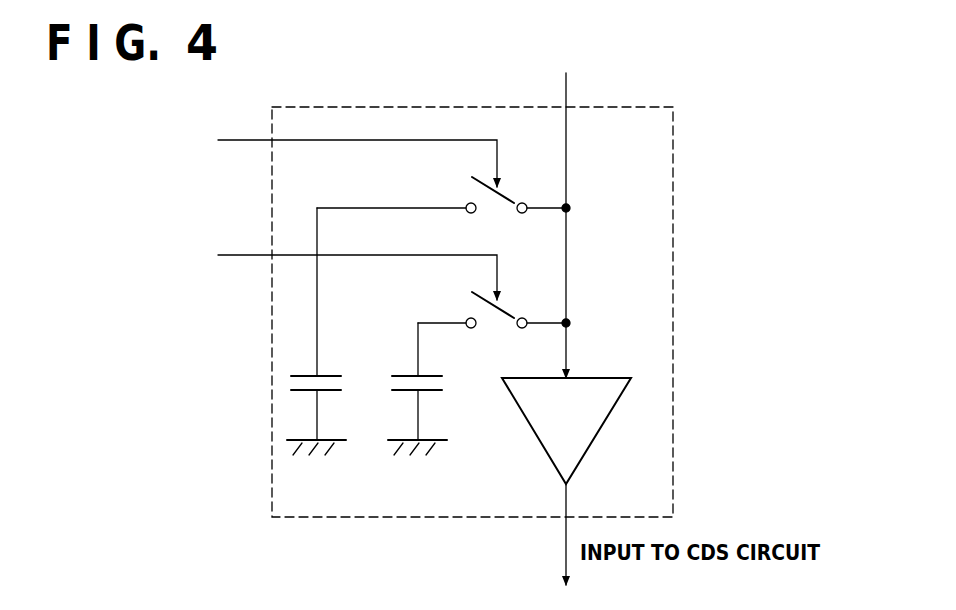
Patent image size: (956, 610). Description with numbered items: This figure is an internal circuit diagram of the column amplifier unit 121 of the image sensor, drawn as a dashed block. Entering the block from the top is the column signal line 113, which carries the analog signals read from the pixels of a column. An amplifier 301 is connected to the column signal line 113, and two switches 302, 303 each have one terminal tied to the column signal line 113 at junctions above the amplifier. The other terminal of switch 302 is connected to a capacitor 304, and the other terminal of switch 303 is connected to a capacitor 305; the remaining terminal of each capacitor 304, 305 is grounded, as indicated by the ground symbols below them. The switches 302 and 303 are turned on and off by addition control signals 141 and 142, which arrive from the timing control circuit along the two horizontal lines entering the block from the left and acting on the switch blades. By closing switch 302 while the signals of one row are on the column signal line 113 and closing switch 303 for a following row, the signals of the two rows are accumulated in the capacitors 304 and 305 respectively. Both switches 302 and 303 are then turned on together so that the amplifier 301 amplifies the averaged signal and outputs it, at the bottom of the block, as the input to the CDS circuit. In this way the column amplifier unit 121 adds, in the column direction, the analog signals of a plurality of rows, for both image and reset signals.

The column amplifier unit 121 is at (412, 107).
The column signal line 113 is at (568, 209).
The addition control signal 141 is at (357, 147).
The addition control signal 142 is at (357, 261).
The switch 302 is at (498, 212).
The switch 303 is at (498, 326).
The capacitor 304 is at (343, 383).
The capacitor 305 is at (444, 383).
The amplifier 301 is at (593, 443).